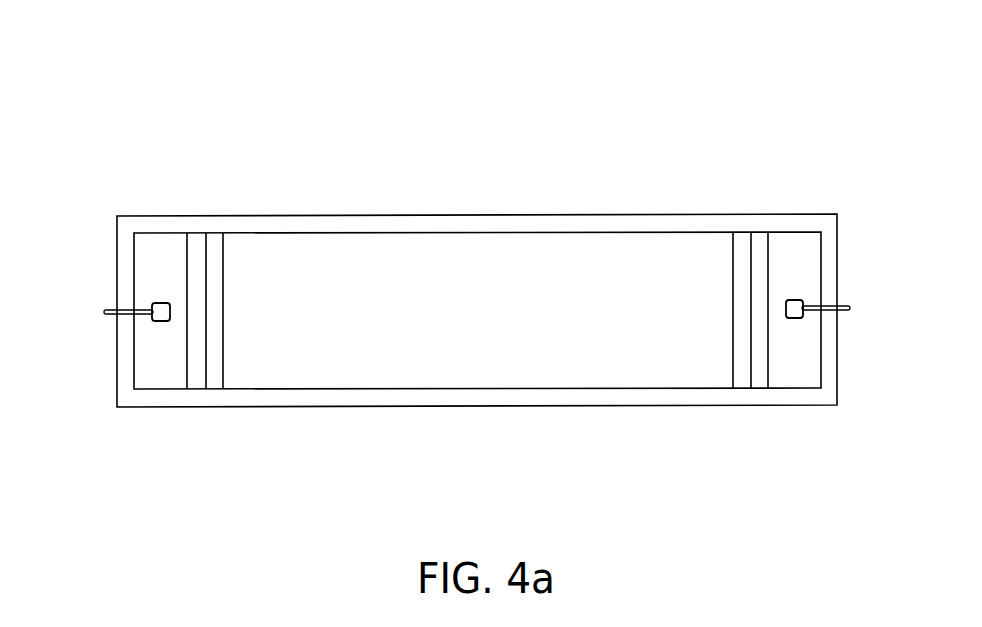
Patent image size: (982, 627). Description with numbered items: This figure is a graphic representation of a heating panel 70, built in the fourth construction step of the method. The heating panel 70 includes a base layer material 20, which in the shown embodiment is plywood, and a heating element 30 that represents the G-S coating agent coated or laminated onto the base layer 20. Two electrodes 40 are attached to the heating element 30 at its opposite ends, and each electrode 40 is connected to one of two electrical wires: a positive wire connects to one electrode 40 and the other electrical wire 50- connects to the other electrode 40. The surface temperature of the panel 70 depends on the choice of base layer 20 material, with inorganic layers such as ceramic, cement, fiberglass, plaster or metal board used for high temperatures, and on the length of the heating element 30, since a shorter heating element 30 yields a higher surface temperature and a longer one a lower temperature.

The heating panel 70 is at (331, 85).
The base layer material 20 is at (587, 213).
The heating element 30 is at (496, 240).
The electrode 40 is at (188, 279).
The electrical wire (−) 50- is at (843, 314).